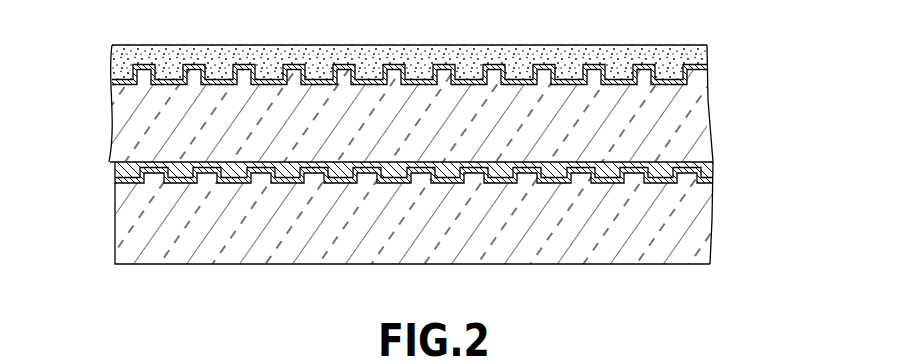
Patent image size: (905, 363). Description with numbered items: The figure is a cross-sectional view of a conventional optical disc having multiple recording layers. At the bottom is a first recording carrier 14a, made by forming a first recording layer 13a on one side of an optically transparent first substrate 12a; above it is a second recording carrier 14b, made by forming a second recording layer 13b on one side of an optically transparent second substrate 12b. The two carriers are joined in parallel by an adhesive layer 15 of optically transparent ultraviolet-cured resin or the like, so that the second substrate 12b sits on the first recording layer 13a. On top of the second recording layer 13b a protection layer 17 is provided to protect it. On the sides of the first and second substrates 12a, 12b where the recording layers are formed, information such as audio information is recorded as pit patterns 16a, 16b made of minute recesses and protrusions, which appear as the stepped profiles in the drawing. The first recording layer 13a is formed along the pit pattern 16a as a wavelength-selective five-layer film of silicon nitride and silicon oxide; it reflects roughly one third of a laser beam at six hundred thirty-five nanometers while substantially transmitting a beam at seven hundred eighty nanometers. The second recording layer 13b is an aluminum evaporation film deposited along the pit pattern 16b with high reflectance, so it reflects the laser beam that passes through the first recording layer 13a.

The protection layer 17 is at (685, 45).
The pit pattern 16b is at (665, 65).
The second recording layer 13b is at (688, 73).
The second substrate 12b is at (683, 122).
The second recording carrier 14b is at (118, 116).
The adhesive layer 15 is at (707, 162).
The pit pattern 16a is at (638, 180).
The first recording layer 13a is at (700, 182).
The first substrate 12a is at (687, 250).
The first recording carrier 14a is at (118, 218).